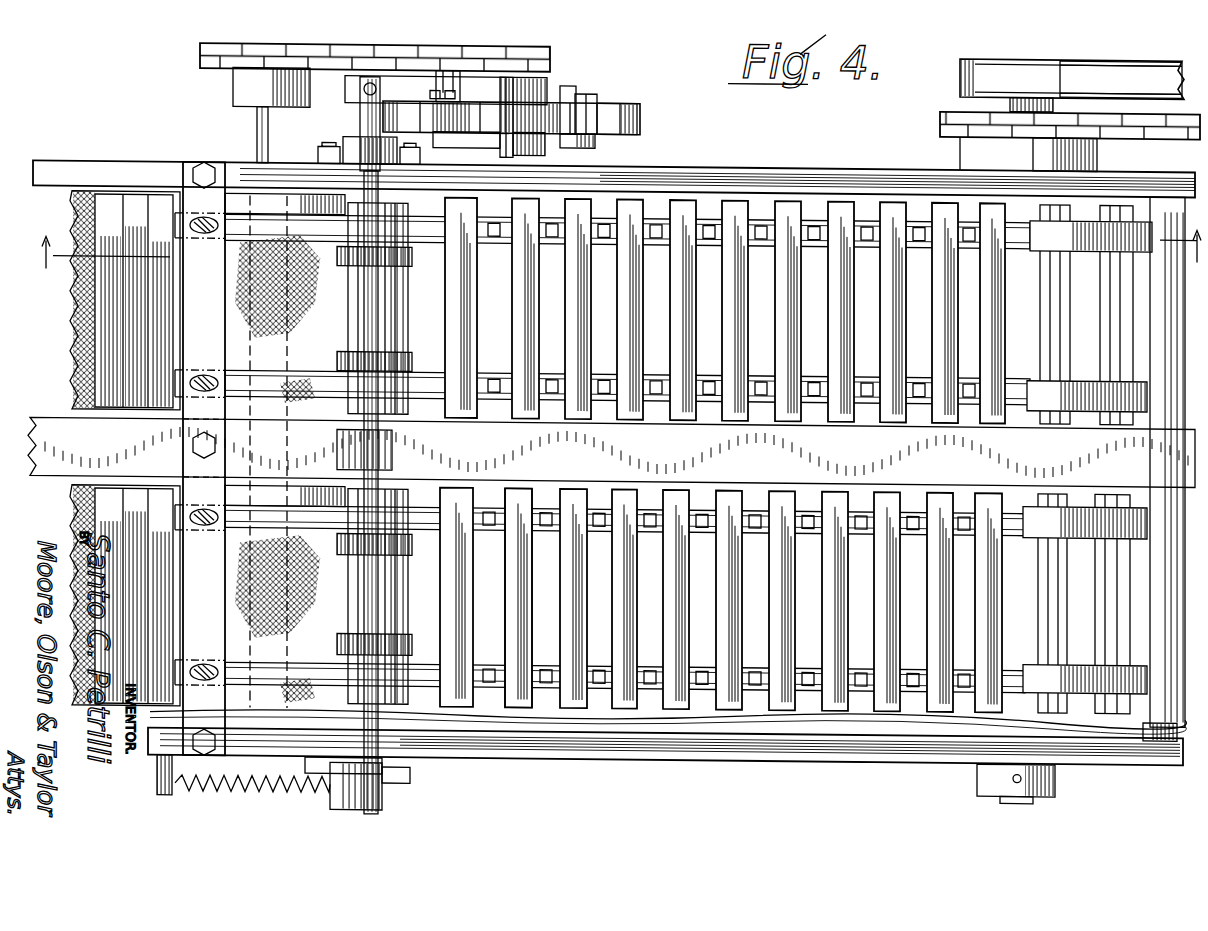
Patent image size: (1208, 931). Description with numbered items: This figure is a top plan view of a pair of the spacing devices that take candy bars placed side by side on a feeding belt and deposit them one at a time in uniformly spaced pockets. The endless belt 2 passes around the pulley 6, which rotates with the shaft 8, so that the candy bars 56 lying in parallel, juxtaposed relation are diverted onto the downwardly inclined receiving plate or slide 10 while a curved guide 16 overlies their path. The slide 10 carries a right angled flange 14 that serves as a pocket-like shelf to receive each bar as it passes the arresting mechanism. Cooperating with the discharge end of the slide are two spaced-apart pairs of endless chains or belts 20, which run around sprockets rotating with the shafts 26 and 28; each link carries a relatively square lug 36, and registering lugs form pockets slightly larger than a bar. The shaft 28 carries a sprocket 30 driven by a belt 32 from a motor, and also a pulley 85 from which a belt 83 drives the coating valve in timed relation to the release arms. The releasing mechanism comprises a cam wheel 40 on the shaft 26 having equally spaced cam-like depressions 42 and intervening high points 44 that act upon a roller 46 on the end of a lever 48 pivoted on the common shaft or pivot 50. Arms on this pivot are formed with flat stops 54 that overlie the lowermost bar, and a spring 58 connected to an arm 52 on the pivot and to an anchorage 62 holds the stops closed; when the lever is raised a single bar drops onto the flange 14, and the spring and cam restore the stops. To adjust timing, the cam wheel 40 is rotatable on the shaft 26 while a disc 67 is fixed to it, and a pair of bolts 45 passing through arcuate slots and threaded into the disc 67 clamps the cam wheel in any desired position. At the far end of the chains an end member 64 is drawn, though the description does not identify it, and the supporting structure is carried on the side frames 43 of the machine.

The endless belt 2 is at (72, 211).
The pulley 6 is at (622, 262).
The shaft 8 is at (257, 128).
The receiving plate or slide 10 is at (398, 188).
The right angled flange 14 is at (421, 484).
The curved guide 16 is at (232, 378).
The endless chains or belts 20 is at (762, 190).
The shaft 26 is at (520, 38).
The shaft 28 is at (1020, 786).
The sprocket 30 is at (960, 142).
The belt 32 is at (1133, 110).
The lug 36 is at (648, 505).
The cam wheel 40 is at (609, 84).
The cam-like depressions 42 is at (615, 97).
The side frames 43 is at (828, 169).
The high points 44 is at (565, 104).
The bolts 45 is at (432, 63).
The roller 46 is at (520, 141).
The lever 48 is at (448, 77).
The pivot 50 is at (360, 118).
The arm 52 is at (385, 784).
The flat stop 54 is at (402, 355).
The candy bars 56 is at (575, 703).
The spring 58 is at (248, 787).
The anchorage 62 is at (165, 788).
The end block 64 is at (1140, 243).
The disc 67 is at (595, 134).
The belt 83 is at (1093, 68).
The pulley 85 is at (1000, 54).